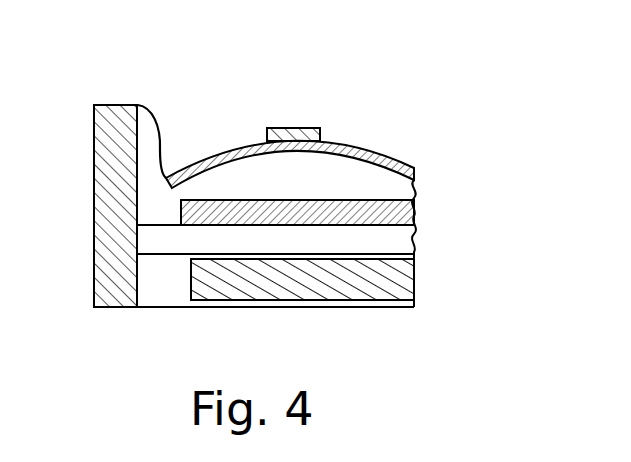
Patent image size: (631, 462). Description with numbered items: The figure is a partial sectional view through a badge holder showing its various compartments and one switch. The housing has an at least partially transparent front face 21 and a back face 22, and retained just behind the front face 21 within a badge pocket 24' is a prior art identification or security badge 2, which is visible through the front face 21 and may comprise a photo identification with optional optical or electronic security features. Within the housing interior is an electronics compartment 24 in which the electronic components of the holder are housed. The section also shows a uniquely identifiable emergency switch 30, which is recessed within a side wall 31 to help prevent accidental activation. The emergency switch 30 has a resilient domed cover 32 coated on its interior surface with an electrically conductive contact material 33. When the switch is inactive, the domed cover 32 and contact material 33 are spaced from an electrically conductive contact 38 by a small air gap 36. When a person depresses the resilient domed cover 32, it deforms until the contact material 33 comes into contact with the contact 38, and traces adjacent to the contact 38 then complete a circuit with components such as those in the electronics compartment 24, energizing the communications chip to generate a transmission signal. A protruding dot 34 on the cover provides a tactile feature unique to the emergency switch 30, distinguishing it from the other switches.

The emergency switch 30 is at (202, 70).
The side wall 31 is at (105, 161).
The front face 21 is at (148, 308).
The badge pocket 24' is at (275, 307).
The identification or security badge 2 is at (343, 290).
The electrically conductive contact 38 is at (416, 220).
The electronics compartment 24 is at (305, 243).
The electrically conductive contact material 33 is at (417, 185).
The resilient domed cover 32 is at (309, 137).
The air gap 36 is at (323, 173).
The back face 22 is at (158, 152).
The protruding dot 34 is at (302, 127).